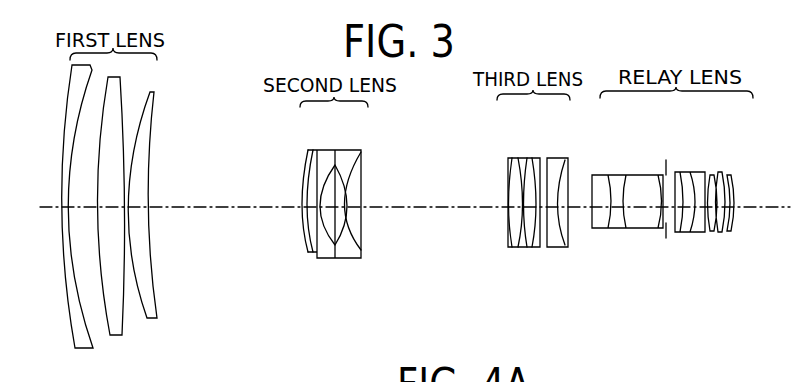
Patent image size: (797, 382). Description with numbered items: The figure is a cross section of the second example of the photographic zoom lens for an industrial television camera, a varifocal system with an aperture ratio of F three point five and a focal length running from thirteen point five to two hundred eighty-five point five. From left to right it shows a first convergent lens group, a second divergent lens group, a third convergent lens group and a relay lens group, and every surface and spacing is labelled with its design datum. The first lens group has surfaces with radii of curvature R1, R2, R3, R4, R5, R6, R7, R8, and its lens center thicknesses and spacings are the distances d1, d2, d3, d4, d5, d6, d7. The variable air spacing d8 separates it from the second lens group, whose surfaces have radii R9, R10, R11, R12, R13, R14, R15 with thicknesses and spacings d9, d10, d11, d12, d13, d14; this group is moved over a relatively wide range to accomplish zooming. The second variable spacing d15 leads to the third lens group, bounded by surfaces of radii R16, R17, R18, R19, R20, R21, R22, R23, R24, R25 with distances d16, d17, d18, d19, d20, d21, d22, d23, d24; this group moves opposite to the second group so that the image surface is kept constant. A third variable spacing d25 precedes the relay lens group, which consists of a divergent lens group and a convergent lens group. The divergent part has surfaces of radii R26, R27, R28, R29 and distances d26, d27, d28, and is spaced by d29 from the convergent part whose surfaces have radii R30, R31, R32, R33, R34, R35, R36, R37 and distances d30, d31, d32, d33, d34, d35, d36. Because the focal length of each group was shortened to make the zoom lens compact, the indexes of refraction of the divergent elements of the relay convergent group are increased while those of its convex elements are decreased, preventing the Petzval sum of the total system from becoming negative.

The center thickness d1 is at (63, 204).
The center thickness d2 is at (96, 207).
The lens spacing d3 is at (97, 209).
The center thickness d4 is at (123, 207).
The center thickness d5 is at (128, 209).
The lens spacing d6 is at (132, 211).
The center thickness d7 is at (147, 207).
The variable air spacing d8 is at (300, 207).
The center thickness d9 is at (305, 209).
The lens spacing d10 is at (308, 207).
The center thickness d11 is at (335, 207).
The lens spacing d12 is at (348, 207).
The center thickness d13 is at (348, 208).
The center thickness d14 is at (346, 207).
The variable air spacing d15 is at (508, 207).
The center thickness d16 is at (512, 200).
The center thickness d17 is at (515, 207).
The lens spacing d18 is at (508, 180).
The center thickness d19 is at (520, 215).
The lens spacing d20 is at (522, 160).
The center thickness d21 is at (528, 220).
The lens spacing d22 is at (530, 162).
The center thickness d23 is at (565, 207).
The center thickness d24 is at (565, 165).
The variable air spacing d25 is at (566, 205).
The center thickness d26 is at (608, 207).
The center thickness d27 is at (626, 207).
The center thickness d28 is at (658, 207).
The lens spacing d29 is at (675, 207).
The center thickness d30 is at (690, 207).
The center thickness d31 is at (705, 207).
The center thickness d32 is at (710, 185).
The lens spacing d33 is at (718, 175).
The center thickness d34 is at (723, 192).
The lens spacing d35 is at (730, 225).
The center thickness d36 is at (730, 213).
The radius of curvature R1 is at (70, 340).
The radius of curvature R2 is at (92, 347).
The radius of curvature R3 is at (105, 336).
The radius of curvature R4 is at (118, 336).
The radius of curvature R5 is at (145, 320).
The radius of curvature R6 is at (152, 320).
The radius of curvature R7 is at (158, 320).
The radius of curvature R8 is at (160, 318).
The radius of curvature R9 is at (305, 253).
The radius of curvature R10 is at (310, 256).
The radius of curvature R11 is at (315, 258).
The radius of curvature R12 is at (322, 258).
The radius of curvature R13 is at (335, 258).
The radius of curvature R14 is at (350, 258).
The radius of curvature R15 is at (365, 258).
The radius of curvature R16 is at (508, 250).
The radius of curvature R17 is at (512, 250).
The radius of curvature R18 is at (516, 248).
The radius of curvature R19 is at (520, 248).
The radius of curvature R20 is at (524, 248).
The radius of curvature R21 is at (528, 248).
The radius of curvature R22 is at (533, 248).
The radius of curvature R23 is at (540, 248).
The radius of curvature R24 is at (550, 248).
The radius of curvature R25 is at (565, 248).
The radius of curvature R26 is at (600, 229).
The radius of curvature R27 is at (612, 229).
The radius of curvature R28 is at (630, 229).
The radius of curvature R29 is at (660, 229).
The radius of curvature R30 is at (678, 233).
The radius of curvature R31 is at (688, 233).
The radius of curvature R32 is at (705, 233).
The radius of curvature R33 is at (712, 233).
The radius of curvature R34 is at (720, 233).
The radius of curvature R35 is at (726, 233).
The radius of curvature R36 is at (731, 233).
The radius of curvature R37 is at (736, 232).